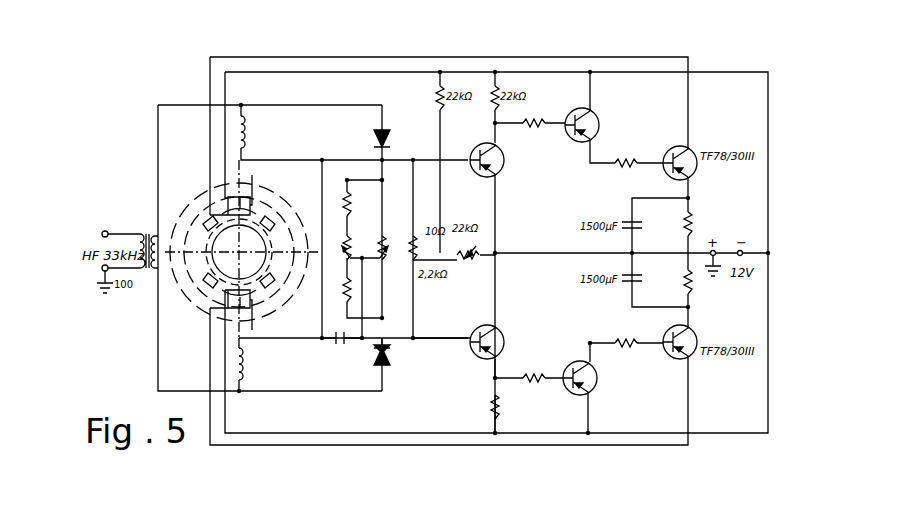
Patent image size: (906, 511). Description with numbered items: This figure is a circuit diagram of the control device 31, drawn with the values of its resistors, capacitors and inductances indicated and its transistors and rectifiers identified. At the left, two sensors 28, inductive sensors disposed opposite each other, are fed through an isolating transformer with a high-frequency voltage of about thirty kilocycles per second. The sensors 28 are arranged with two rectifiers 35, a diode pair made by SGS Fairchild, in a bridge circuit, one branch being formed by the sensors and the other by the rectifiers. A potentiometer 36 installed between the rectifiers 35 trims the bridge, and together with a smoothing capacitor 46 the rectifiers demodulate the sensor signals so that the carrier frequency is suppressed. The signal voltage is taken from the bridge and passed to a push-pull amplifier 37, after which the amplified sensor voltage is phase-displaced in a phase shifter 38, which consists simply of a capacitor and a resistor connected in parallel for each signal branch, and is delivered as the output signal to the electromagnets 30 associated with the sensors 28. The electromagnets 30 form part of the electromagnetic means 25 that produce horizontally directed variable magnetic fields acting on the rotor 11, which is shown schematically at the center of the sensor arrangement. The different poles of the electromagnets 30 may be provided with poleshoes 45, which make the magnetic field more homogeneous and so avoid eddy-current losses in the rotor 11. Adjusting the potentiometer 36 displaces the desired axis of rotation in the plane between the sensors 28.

The rotor 11 is at (222, 262).
The electromagnetic means 25 is at (186, 313).
The sensors 28 is at (246, 132).
The electromagnets 30 is at (250, 196).
The control device 31 is at (627, 52).
The rectifiers 35 is at (377, 135).
The potentiometer 36 is at (365, 236).
The push-pull amplifier 37 is at (574, 178).
The phase shifter 38 is at (705, 214).
The poleshoes 45 is at (207, 231).
The smoothing capacitor 46 is at (334, 348).